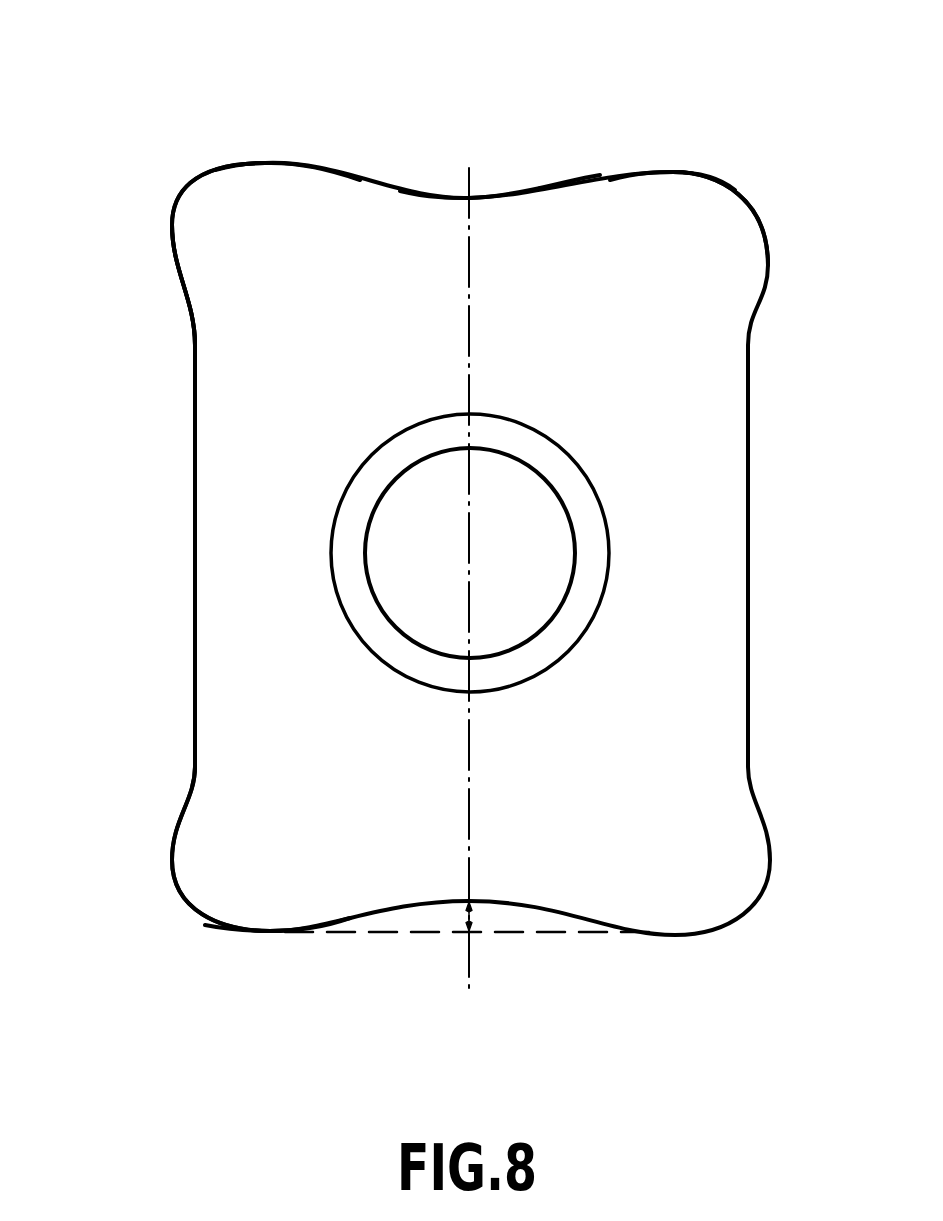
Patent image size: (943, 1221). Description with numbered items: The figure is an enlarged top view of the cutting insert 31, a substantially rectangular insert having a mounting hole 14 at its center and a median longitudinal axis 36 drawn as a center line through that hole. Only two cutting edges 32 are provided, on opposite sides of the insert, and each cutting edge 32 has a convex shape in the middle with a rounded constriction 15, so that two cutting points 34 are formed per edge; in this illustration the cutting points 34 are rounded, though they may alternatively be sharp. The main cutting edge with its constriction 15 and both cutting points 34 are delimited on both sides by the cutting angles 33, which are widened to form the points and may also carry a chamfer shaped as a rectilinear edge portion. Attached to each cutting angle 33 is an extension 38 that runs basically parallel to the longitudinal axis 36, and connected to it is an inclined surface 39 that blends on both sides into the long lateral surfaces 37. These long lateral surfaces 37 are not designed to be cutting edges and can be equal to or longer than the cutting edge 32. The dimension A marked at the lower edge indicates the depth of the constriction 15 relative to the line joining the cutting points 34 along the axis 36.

The mounting hole 14 is at (533, 505).
The constriction 15 is at (441, 157).
The cutting insert 31 is at (326, 310).
The cutting edge 32 is at (585, 160).
The cutting angle 33 is at (766, 174).
The cutting point 34 is at (266, 131).
The median longitudinal axis 36 is at (468, 788).
The long lateral surface 37 is at (195, 530).
The extension 38 is at (173, 222).
The inclined surface 39 is at (180, 303).
The recess depth dimension A is at (470, 913).